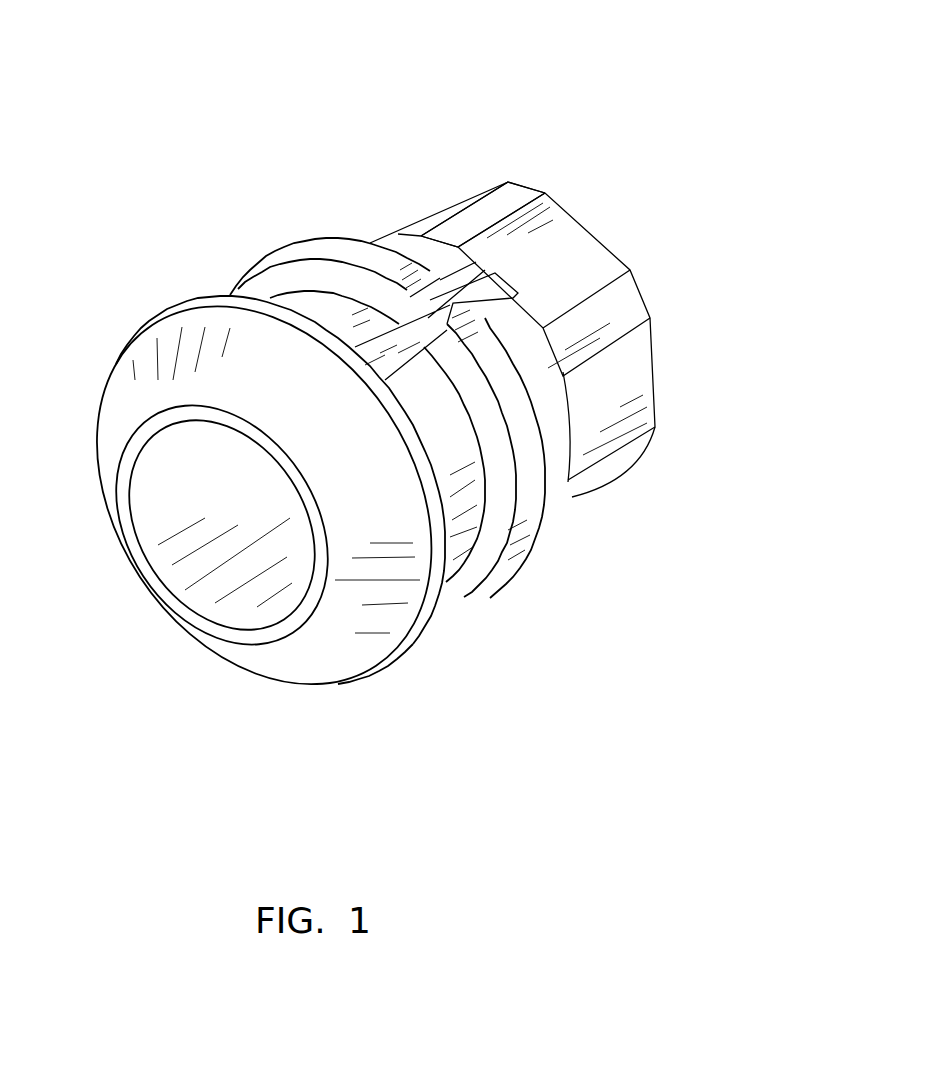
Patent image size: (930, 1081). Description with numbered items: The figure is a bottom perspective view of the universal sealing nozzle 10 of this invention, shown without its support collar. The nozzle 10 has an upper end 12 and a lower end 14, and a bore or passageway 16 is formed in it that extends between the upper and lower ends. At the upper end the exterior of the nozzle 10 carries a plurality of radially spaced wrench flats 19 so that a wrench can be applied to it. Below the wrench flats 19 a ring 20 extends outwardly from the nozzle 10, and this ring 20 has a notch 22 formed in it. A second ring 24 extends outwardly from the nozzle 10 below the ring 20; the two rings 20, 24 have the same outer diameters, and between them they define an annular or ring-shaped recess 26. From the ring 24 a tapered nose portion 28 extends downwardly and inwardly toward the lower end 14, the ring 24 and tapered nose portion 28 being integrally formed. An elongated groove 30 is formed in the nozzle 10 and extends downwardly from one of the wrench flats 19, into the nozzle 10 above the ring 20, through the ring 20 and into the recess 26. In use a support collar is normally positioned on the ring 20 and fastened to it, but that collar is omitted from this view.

The nozzle 10 is at (583, 167).
The upper end 12 is at (640, 248).
The lower end 14 is at (177, 670).
The bore or passageway 16 is at (187, 512).
The wrench flats 19 is at (538, 279).
The ring 20 is at (507, 570).
The notch 22 is at (428, 277).
The ring 24 is at (190, 302).
The annular recess 26 is at (465, 500).
The tapered nose portion 28 is at (365, 620).
The elongated groove 30 is at (430, 337).